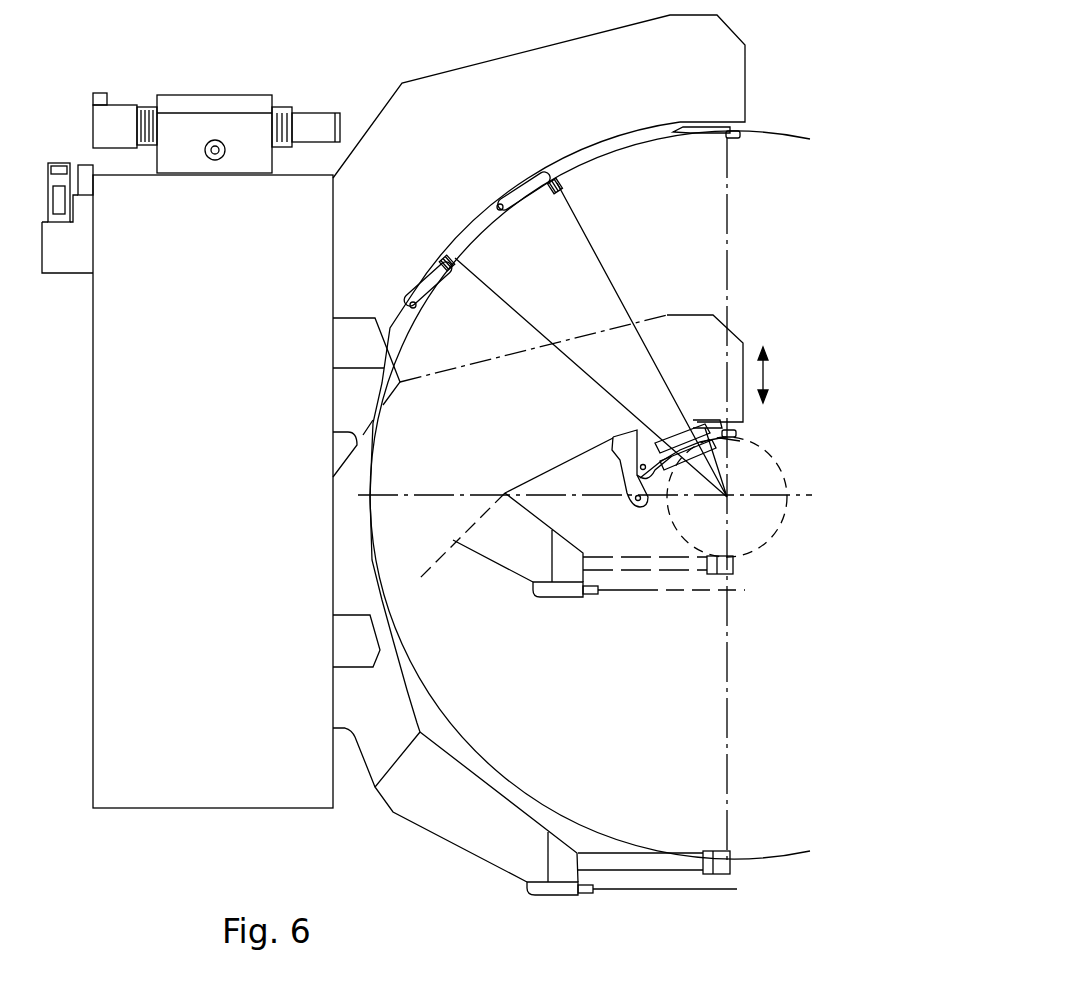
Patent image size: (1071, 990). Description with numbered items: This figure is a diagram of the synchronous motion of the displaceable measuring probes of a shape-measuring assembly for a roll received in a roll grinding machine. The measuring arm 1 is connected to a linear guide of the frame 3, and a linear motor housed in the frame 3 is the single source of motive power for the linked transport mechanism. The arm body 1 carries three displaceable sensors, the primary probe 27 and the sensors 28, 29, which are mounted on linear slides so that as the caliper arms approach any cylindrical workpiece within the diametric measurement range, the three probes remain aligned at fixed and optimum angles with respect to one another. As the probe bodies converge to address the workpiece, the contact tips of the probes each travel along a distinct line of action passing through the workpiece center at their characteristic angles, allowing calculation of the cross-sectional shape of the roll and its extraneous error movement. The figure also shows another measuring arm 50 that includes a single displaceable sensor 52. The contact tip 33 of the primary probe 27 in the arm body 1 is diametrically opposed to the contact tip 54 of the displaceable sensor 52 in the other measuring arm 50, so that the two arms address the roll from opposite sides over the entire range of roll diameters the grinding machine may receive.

The measuring arm 1 is at (500, 64).
The frame 3 is at (115, 378).
The primary probe 27 is at (708, 137).
The sensor 28 is at (526, 176).
The sensor 29 is at (430, 255).
The contact tip 33 is at (738, 139).
The measuring arm 50 is at (510, 580).
The displaceable sensor 52 is at (650, 580).
The contact tip 54 is at (730, 862).